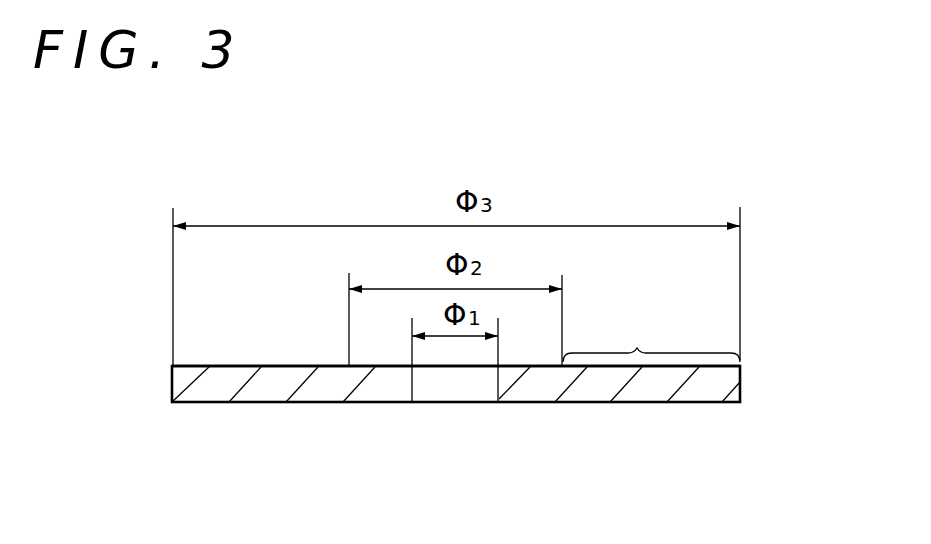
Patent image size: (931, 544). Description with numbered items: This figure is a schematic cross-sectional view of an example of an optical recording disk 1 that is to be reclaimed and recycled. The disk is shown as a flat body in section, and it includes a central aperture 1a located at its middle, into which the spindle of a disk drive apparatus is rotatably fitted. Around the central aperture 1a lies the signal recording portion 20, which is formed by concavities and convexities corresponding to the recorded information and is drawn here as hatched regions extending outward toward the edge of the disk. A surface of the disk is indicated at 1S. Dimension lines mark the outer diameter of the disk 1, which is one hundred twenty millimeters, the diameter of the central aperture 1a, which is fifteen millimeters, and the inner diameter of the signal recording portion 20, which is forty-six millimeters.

The optical recording disk 1 is at (731, 385).
The surface of substrate 1S is at (277, 354).
The central aperture 1a is at (494, 388).
The signal recording portion 20 is at (217, 350).